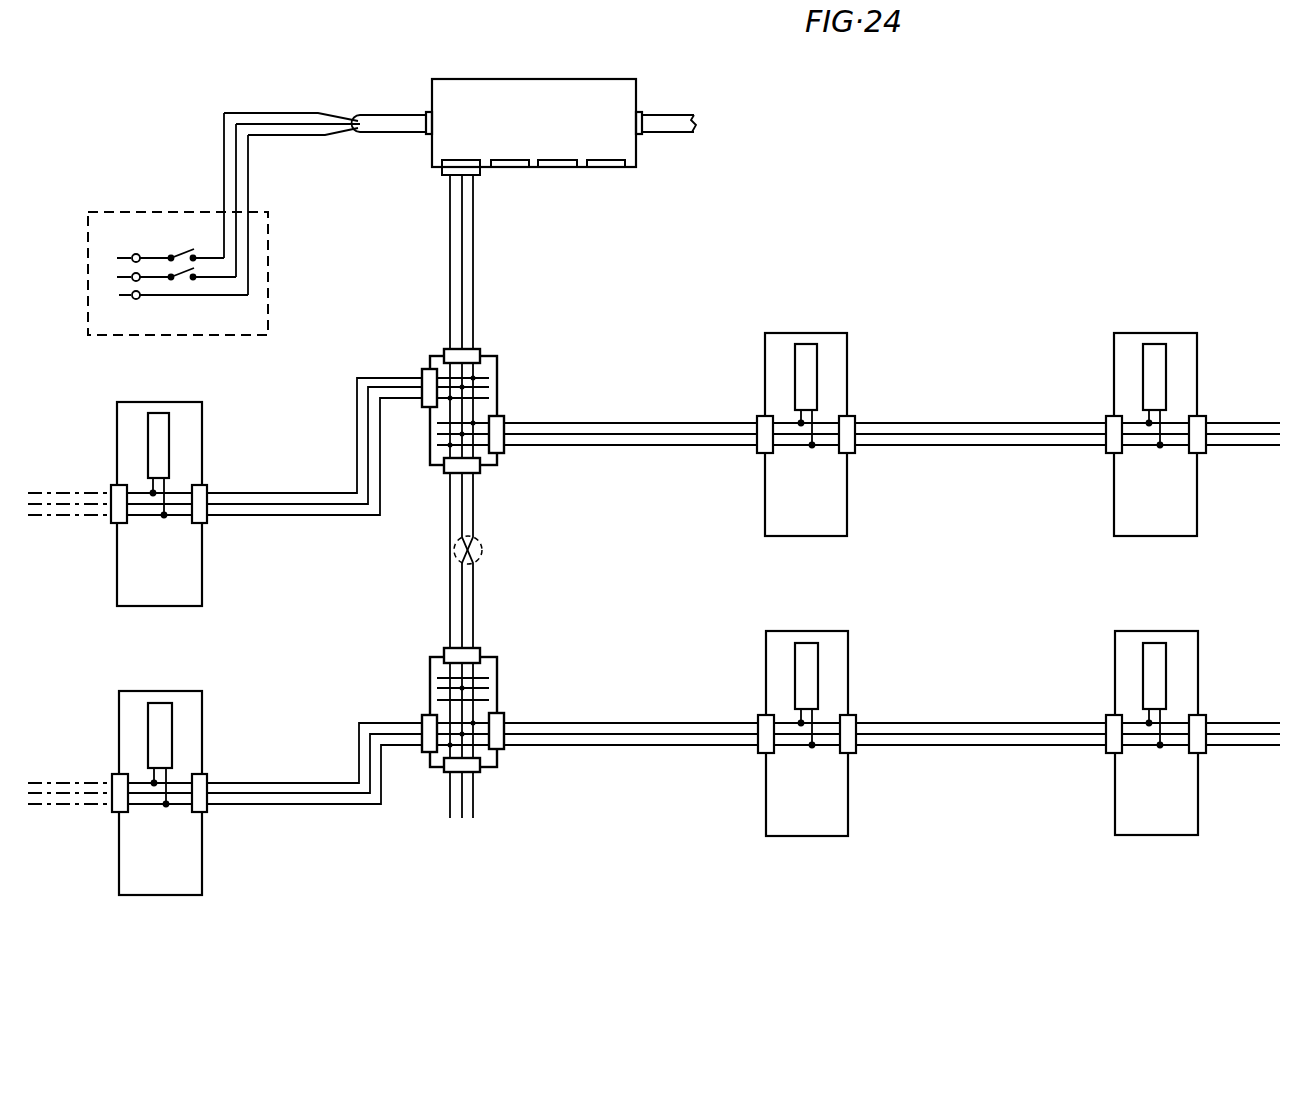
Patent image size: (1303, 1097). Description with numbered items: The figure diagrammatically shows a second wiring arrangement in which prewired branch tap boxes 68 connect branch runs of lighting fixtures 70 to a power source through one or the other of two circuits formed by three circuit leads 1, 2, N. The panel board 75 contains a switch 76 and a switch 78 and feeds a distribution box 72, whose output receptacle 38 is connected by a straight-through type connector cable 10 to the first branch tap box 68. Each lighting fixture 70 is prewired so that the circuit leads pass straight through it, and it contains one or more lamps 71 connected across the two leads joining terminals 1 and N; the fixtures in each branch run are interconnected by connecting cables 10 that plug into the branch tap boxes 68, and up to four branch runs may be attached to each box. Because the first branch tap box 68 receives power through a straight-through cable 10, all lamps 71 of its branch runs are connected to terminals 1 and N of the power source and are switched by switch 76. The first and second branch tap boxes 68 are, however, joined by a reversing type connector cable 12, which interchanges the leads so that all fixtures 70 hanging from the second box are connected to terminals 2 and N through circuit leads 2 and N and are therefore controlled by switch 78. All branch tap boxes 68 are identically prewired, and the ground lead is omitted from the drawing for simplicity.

The distribution box 72 is at (460, 177).
The output receptacle 38 is at (466, 160).
The panel board 75 is at (206, 273).
The switch 76 is at (203, 238).
The switch 78 is at (183, 281).
The straight-through type connector cable 10 is at (654, 496).
The circuit lead 1 is at (474, 226).
The circuit lead 2 is at (463, 255).
The circuit lead N is at (451, 282).
The reversing type connector cable 12 is at (447, 520).
The branch tap box 68 is at (491, 354).
The lighting fixture 70 is at (676, 598).
The lamp 71 is at (155, 446).